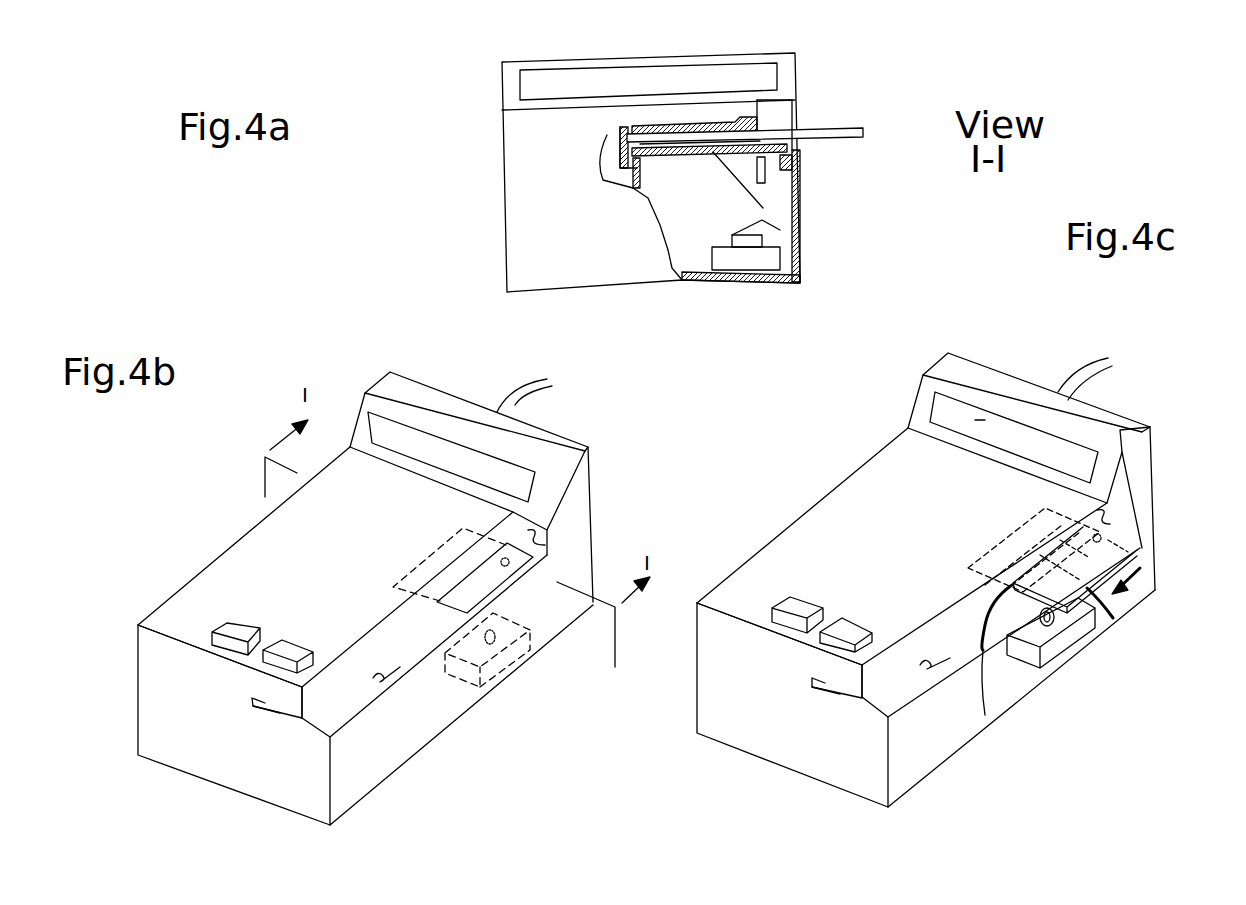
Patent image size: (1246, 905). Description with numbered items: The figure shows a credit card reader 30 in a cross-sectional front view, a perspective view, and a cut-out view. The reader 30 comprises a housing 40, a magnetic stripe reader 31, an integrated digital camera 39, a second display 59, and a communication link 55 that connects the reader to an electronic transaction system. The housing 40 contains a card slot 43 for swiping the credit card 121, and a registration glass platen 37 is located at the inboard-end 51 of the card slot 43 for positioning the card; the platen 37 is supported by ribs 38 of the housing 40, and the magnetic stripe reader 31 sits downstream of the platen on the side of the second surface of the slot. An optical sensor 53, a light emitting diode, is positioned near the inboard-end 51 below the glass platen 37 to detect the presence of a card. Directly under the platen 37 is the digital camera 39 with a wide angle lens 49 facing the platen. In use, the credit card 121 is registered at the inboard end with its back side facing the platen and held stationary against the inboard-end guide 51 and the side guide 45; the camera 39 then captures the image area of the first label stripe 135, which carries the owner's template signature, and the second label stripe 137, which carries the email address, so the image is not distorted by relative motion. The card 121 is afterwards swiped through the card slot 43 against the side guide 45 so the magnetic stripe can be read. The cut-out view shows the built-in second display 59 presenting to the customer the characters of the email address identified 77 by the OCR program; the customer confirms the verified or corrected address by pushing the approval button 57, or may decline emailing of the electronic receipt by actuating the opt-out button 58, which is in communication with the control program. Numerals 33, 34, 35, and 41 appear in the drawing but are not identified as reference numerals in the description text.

In FIG. 4A, the credit card reader 30 is at (478, 77).
In FIG. 4B, the credit card reader 30 is at (222, 495).
In FIG. 4C, the credit card reader 30 is at (822, 452).
In FIG. 4B, the magnetic stripe reader 31 is at (400, 667).
In FIG. 4C, the magnetic stripe reader 31 is at (950, 658).
In FIG. 4A, the upper plate 33 is at (650, 147).
In FIG. 4C, the upper plate 33 is at (1048, 535).
In FIG. 4C, the lower plate 34 is at (1070, 543).
In FIG. 4C, the card tray 35 is at (1080, 555).
In FIG. 4A, the registration glass platen 37 is at (763, 208).
In FIG. 4B, the registration glass platen 37 is at (515, 557).
In FIG. 4A, the ribs 38 is at (800, 168).
In FIG. 4A, the digital camera 39 is at (733, 262).
In FIG. 4B, the digital camera 39 is at (503, 660).
In FIG. 4C, the digital camera 39 is at (1063, 640).
In FIG. 4A, the housing 40 is at (507, 258).
In FIG. 4B, the housing 40 is at (208, 563).
In FIG. 4C, the housing 40 is at (792, 523).
In FIG. 4A, the card slot 41 is at (665, 128).
In FIG. 4B, the card slot 41 is at (351, 685).
In FIG. 4C, the card slot 41 is at (910, 662).
In FIG. 4B, the card slot 43 is at (277, 712).
In FIG. 4C, the card slot 43 is at (833, 688).
In FIG. 4B, the side guide 45 is at (250, 700).
In FIG. 4C, the side guide 45 is at (810, 680).
In FIG. 4A, the wide angle lens 49 is at (765, 220).
In FIG. 4B, the wide angle lens 49 is at (495, 633).
In FIG. 4C, the wide angle lens 49 is at (1077, 607).
In FIG. 4A, the inboard-end 51 is at (787, 115).
In FIG. 4B, the inboard-end 51 is at (545, 543).
In FIG. 4C, the inboard-end 51 is at (1108, 512).
In FIG. 4A, the optical sensor 53 is at (763, 172).
In FIG. 4B, the optical sensor 53 is at (508, 560).
In FIG. 4C, the optical sensor 53 is at (1097, 532).
In FIG. 4B, the communication link 55 is at (513, 400).
In FIG. 4C, the communication link 55 is at (1075, 380).
In FIG. 4B, the approval button 57 is at (283, 643).
In FIG. 4C, the approval button 57 is at (847, 623).
In FIG. 4B, the opt-out button 58 is at (228, 627).
In FIG. 4C, the opt-out button 58 is at (800, 613).
In FIG. 4C, the second display 59 is at (943, 403).
In FIG. 4C, the email address identified 77 is at (977, 420).
In FIG. 4A, the credit card 121 is at (847, 127).
In FIG. 4C, the credit card 121 is at (1123, 542).
In FIG. 4A, the first label stripe 135 is at (697, 143).
In FIG. 4A, the second label stripe 137 is at (757, 140).